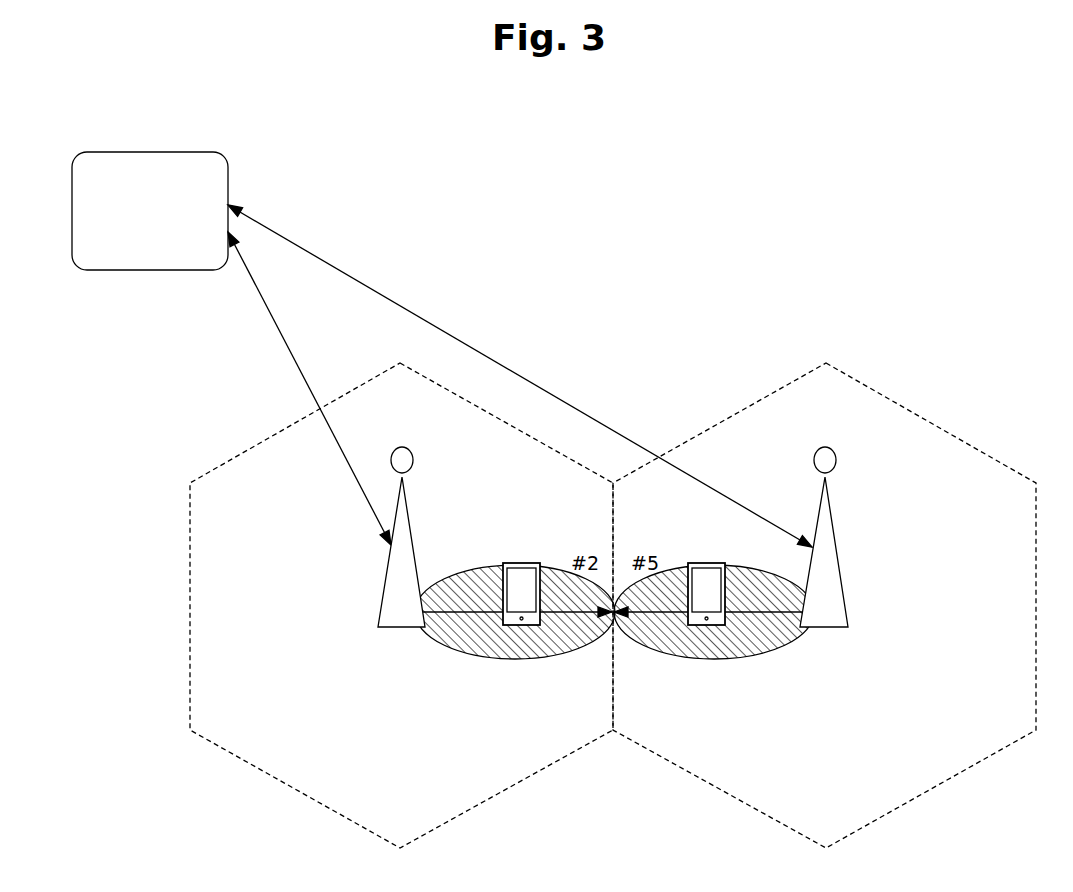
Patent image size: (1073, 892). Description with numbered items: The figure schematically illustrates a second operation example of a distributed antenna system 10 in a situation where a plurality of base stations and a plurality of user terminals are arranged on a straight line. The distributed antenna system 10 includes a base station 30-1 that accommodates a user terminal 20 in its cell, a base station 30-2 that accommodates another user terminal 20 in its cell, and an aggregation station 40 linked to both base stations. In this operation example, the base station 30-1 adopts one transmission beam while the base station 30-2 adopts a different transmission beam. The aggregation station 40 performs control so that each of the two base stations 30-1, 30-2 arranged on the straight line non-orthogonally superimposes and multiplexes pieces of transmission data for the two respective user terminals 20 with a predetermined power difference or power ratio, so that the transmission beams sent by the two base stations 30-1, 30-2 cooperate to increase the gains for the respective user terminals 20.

The distributed antenna system 10 is at (735, 180).
The user terminal 20 is at (520, 563).
The base station 30-1 is at (413, 517).
The base station 30-2 is at (834, 516).
The aggregation station 40 is at (226, 158).